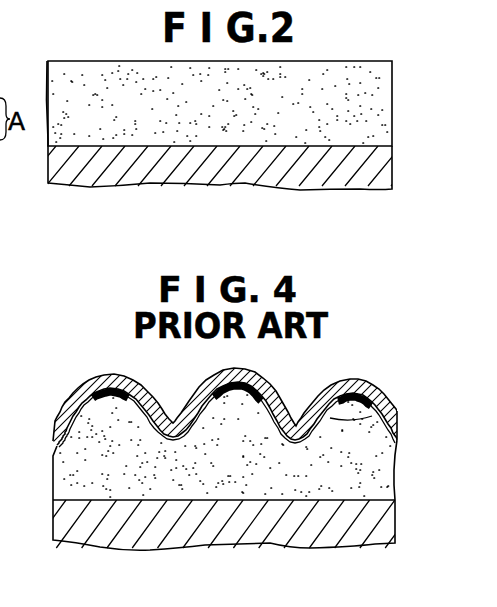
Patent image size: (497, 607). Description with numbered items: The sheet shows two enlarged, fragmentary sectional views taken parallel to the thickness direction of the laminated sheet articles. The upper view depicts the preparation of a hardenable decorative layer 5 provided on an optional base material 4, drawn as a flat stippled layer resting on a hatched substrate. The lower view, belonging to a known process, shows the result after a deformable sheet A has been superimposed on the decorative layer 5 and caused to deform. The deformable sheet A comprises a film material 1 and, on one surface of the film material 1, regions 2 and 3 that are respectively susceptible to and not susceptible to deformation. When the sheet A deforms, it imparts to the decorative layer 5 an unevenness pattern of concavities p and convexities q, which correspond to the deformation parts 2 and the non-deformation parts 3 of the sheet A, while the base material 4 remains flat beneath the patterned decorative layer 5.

In FIG. 4, the film material 1 is at (108, 374).
In FIG. 4, the region susceptible to deformation 2 is at (59, 446).
In FIG. 4, the region not susceptible to deformation 3 is at (233, 385).
In FIG. 2, the base material 4 is at (387, 168).
In FIG. 4, the base material 4 is at (271, 541).
In FIG. 2, the decorative layer 5 is at (388, 110).
In FIG. 4, the decorative layer 5 is at (122, 412).
In FIG. 4, the deformable sheet A is at (7, 405).
In FIG. 4, the concavities p is at (293, 450).
In FIG. 4, the convexities q is at (222, 402).